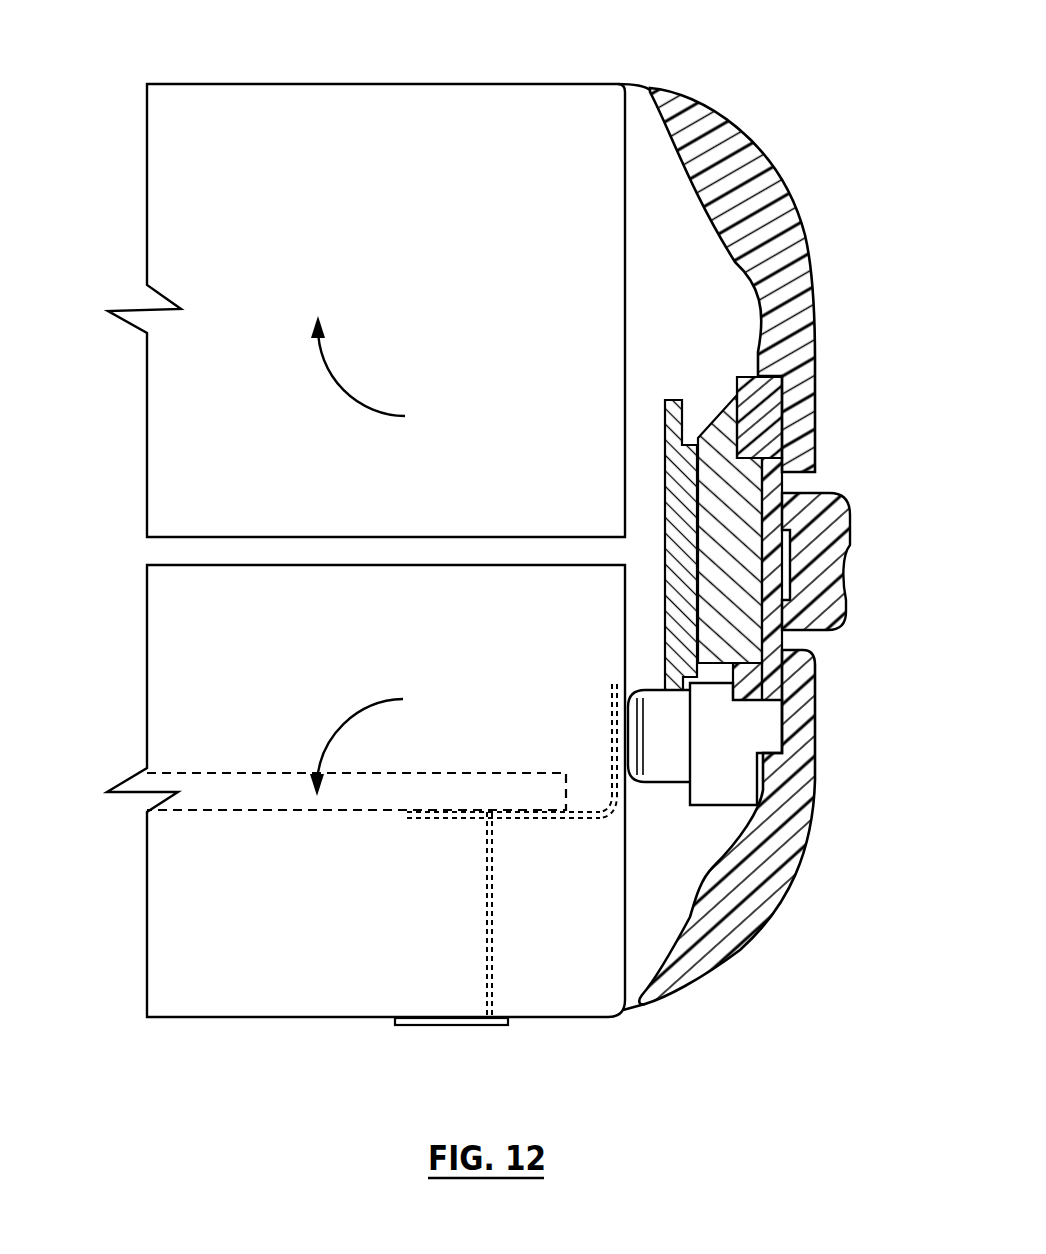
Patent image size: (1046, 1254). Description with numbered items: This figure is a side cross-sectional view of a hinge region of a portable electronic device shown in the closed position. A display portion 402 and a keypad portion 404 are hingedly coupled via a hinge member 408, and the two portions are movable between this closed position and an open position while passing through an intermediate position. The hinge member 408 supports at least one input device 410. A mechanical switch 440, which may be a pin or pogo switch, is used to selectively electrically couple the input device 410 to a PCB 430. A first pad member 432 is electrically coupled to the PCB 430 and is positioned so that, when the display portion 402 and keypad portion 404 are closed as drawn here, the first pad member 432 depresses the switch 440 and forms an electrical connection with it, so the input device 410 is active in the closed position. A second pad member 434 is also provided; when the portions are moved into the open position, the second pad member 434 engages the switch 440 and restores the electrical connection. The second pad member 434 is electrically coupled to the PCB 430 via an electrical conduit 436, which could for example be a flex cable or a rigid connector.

The display portion 402 is at (296, 84).
The keypad portion 404 is at (248, 1020).
The hinge member 408 is at (733, 960).
The input device 410 is at (838, 622).
The PCB 430 is at (198, 773).
The first pad member 432 is at (612, 725).
The second pad member 434 is at (470, 1025).
The electrical conduit 436 is at (492, 898).
The mechanical switch 440 is at (662, 783).